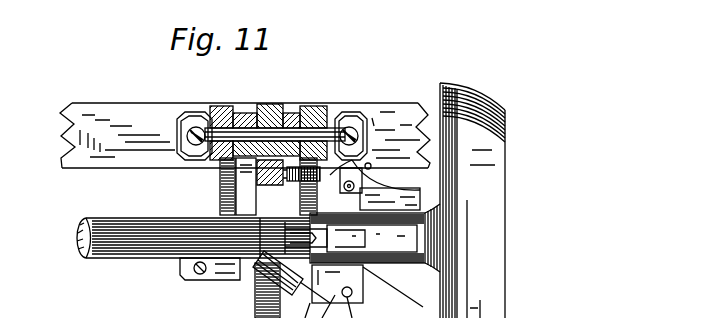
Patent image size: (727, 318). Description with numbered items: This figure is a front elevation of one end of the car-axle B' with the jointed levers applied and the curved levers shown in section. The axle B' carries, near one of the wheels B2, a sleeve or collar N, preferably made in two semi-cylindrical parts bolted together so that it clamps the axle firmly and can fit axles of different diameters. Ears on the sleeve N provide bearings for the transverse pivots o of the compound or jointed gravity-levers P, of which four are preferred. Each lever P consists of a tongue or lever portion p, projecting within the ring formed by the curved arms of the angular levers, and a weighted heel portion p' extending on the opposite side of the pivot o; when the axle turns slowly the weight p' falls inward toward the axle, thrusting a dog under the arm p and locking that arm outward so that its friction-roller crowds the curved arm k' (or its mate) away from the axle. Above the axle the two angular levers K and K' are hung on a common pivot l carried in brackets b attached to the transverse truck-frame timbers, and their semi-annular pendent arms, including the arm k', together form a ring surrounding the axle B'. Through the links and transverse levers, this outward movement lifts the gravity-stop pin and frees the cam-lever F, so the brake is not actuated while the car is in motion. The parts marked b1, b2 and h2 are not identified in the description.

The brackets b is at (182, 126).
The angular lever K is at (255, 116).
The angular lever K' is at (292, 116).
The common pivot l is at (283, 133).
The upright bearing b1 is at (238, 186).
The upright bearing b2 is at (286, 238).
The compound or jointed gravity-lever P is at (375, 176).
The transverse pivot o is at (371, 164).
The pivot pin h2 is at (346, 194).
The truck-axle B' is at (202, 238).
The cam-lever F is at (367, 238).
The sleeve or collar N is at (413, 268).
The wheel B2 is at (472, 200).
The curved pendent arm k' is at (278, 283).
The tongue or lever portion p is at (314, 297).
The weighted heel portion p' is at (367, 291).